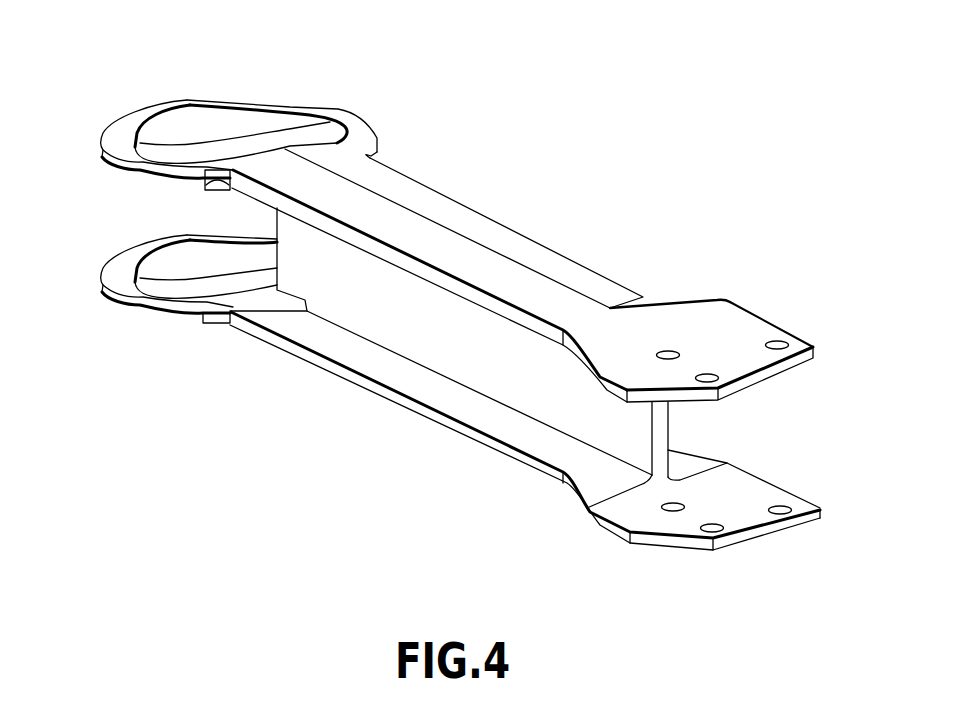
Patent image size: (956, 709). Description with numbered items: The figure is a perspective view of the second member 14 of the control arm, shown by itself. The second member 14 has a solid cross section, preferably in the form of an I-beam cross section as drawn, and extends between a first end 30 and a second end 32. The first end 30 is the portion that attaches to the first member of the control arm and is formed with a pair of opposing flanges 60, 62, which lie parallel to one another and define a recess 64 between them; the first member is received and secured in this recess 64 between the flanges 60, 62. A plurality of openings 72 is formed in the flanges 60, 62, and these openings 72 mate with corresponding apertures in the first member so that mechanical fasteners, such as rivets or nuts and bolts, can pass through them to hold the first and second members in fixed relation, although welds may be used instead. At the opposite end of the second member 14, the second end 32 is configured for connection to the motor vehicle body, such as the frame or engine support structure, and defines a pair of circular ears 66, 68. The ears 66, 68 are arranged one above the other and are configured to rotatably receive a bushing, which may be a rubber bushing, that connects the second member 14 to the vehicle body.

The second member 14 is at (288, 50).
The first end 30 is at (767, 308).
The second end 32 is at (358, 125).
The flange 60 is at (788, 364).
The flange 62 is at (785, 487).
The recess 64 is at (782, 427).
The circular ear 66 is at (131, 178).
The circular ear 68 is at (132, 312).
The openings 72 is at (707, 375).